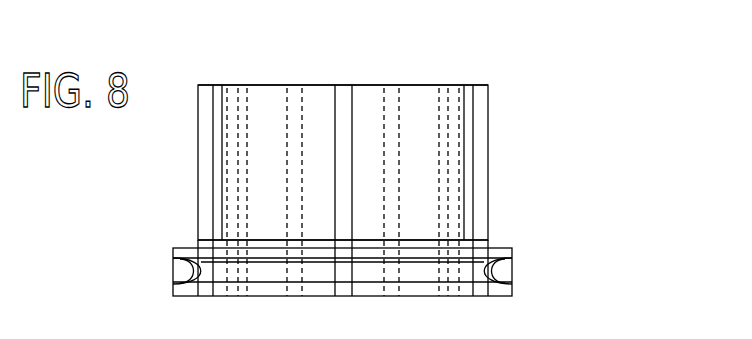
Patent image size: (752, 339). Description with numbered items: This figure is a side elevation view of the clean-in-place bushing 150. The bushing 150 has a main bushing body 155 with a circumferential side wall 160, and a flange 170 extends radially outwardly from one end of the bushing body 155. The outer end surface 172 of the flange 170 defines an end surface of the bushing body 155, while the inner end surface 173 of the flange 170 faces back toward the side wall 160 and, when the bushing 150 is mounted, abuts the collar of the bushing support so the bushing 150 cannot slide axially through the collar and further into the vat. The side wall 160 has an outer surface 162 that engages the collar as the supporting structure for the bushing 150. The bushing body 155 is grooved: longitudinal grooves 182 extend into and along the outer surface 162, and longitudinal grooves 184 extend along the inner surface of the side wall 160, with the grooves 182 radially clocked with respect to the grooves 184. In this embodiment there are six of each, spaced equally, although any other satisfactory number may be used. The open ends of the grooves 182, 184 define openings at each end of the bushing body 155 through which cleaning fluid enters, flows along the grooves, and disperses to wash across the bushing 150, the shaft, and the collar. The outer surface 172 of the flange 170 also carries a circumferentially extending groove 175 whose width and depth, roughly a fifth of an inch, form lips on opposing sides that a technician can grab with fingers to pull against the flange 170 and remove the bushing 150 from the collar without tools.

The bushing 150 is at (355, 172).
The main bushing body 155 is at (488, 85).
The circumferential side wall 160 is at (198, 188).
The outer surface 162 is at (265, 135).
The flange 170 is at (330, 273).
The outer end surface 172 is at (505, 296).
The inner end surface 173 is at (505, 250).
The groove 175 is at (492, 272).
The longitudinal grooves 182 is at (340, 100).
The longitudinal grooves 184 is at (292, 107).